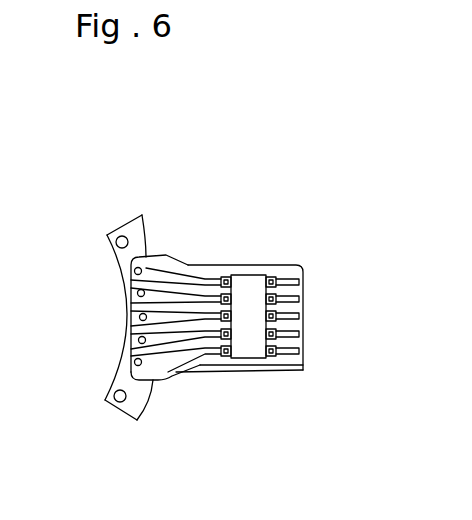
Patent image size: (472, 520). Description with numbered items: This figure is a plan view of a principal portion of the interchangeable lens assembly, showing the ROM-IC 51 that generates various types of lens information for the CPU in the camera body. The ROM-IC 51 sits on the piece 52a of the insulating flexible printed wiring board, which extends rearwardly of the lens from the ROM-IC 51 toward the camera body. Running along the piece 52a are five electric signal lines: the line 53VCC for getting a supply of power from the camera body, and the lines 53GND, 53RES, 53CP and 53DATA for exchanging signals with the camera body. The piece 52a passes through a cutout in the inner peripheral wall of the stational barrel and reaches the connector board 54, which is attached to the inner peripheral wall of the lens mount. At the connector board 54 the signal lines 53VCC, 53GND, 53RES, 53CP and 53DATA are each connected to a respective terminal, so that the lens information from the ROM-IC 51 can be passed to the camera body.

The ROM-IC 51 is at (248, 292).
The piece of the board 52a is at (290, 372).
The electric signal line VCC 53VCC is at (156, 272).
The electric signal line GND 53GND is at (166, 296).
The electric signal line RES 53RES is at (168, 320).
The electric signal line CP 53CP is at (172, 335).
The electric signal line DATA 53DATA is at (158, 362).
The connector board 54 is at (124, 410).